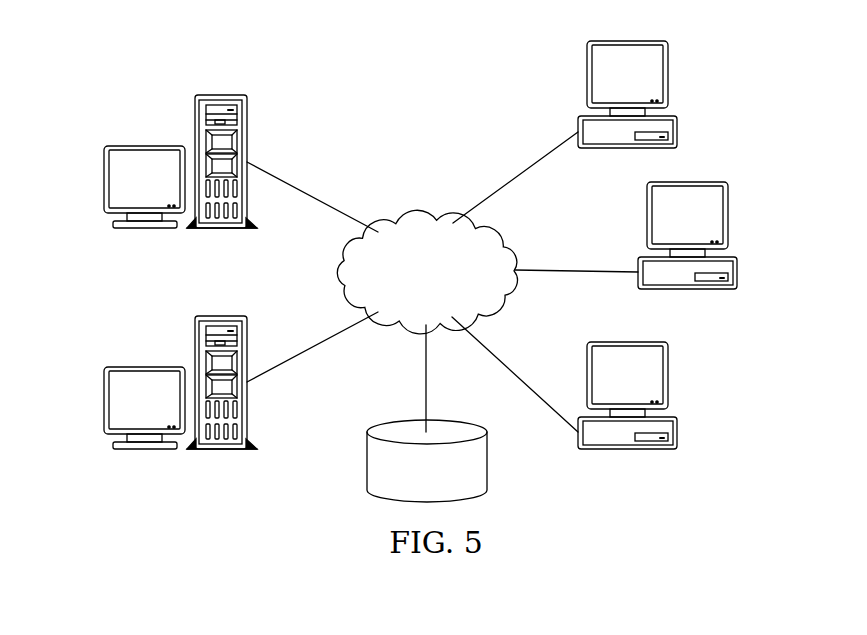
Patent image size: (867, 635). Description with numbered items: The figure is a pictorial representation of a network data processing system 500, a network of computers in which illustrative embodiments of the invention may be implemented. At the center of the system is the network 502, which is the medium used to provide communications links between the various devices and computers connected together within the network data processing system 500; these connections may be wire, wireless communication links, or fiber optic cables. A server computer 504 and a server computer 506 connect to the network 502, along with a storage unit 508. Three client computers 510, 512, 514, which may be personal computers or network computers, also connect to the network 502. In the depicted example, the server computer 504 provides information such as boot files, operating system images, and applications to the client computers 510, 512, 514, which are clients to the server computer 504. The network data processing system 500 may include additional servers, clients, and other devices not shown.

The network data processing system 500 is at (310, 80).
The network 502 is at (400, 223).
The server computer 504 is at (104, 398).
The server computer 506 is at (104, 180).
The storage unit 508 is at (365, 462).
The client computer 510 is at (677, 120).
The client computer 512 is at (737, 283).
The client computer 514 is at (677, 443).